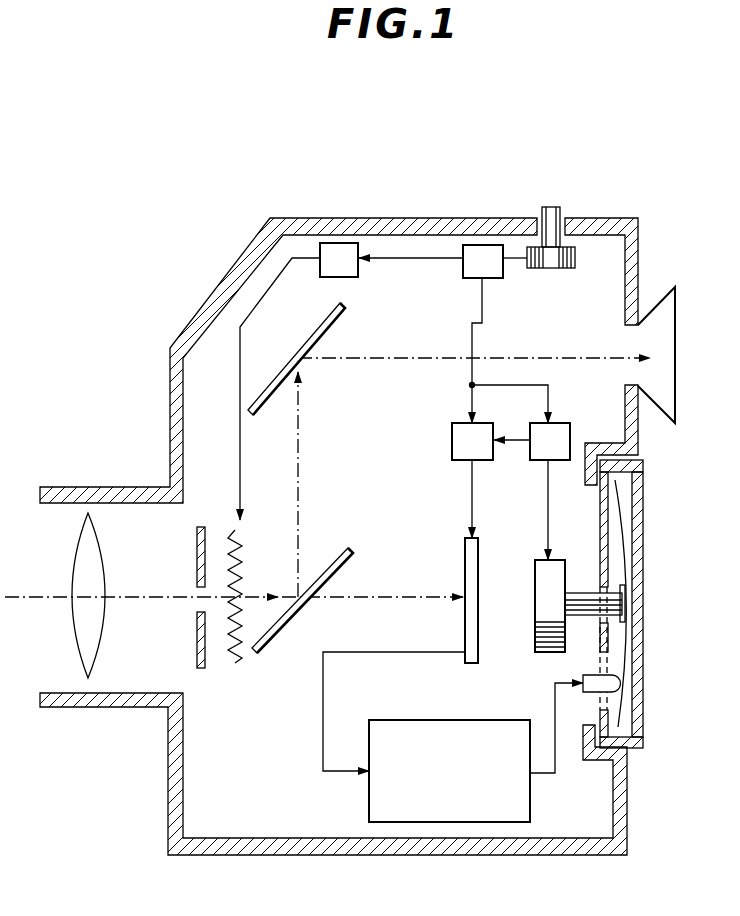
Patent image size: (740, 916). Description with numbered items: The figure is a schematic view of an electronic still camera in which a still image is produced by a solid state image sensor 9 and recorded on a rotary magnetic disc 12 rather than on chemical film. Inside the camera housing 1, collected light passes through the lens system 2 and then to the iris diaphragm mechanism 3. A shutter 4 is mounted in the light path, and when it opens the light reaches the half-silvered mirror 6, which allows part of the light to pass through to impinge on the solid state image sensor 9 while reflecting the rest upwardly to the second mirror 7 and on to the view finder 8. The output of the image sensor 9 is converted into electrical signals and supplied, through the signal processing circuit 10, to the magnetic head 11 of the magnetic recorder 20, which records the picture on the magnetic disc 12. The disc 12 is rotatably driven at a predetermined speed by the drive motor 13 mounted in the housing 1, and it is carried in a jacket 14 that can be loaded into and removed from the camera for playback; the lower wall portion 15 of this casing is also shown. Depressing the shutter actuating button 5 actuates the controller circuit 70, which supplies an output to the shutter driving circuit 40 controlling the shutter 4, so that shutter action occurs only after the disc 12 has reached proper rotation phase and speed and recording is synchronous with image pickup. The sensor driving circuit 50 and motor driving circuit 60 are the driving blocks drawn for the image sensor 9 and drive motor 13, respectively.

The camera housing 1 is at (209, 297).
The lens system 2 is at (72, 648).
The iris diaphragm mechanism 3 is at (197, 652).
The shutter 4 is at (235, 663).
The shutter actuating button 5 is at (560, 212).
The half-silvered mirror 6 is at (325, 571).
The second mirror 7 is at (299, 352).
The view finder 8 is at (677, 330).
The solid state image sensor 9 is at (479, 549).
The signal processing circuit 10 is at (456, 750).
The magnetic head 11 is at (620, 683).
The rotary magnetic disc 12 is at (626, 547).
The drive motor 13 is at (535, 602).
The jacket 14 is at (643, 502).
The casing bottom wall 15 is at (627, 752).
The magnetic recorder 20 is at (580, 656).
The shutter driving circuit 40 is at (328, 243).
The sensor driving circuit 50 is at (451, 438).
The motor driving circuit 60 is at (537, 423).
The controller circuit 70 is at (470, 245).